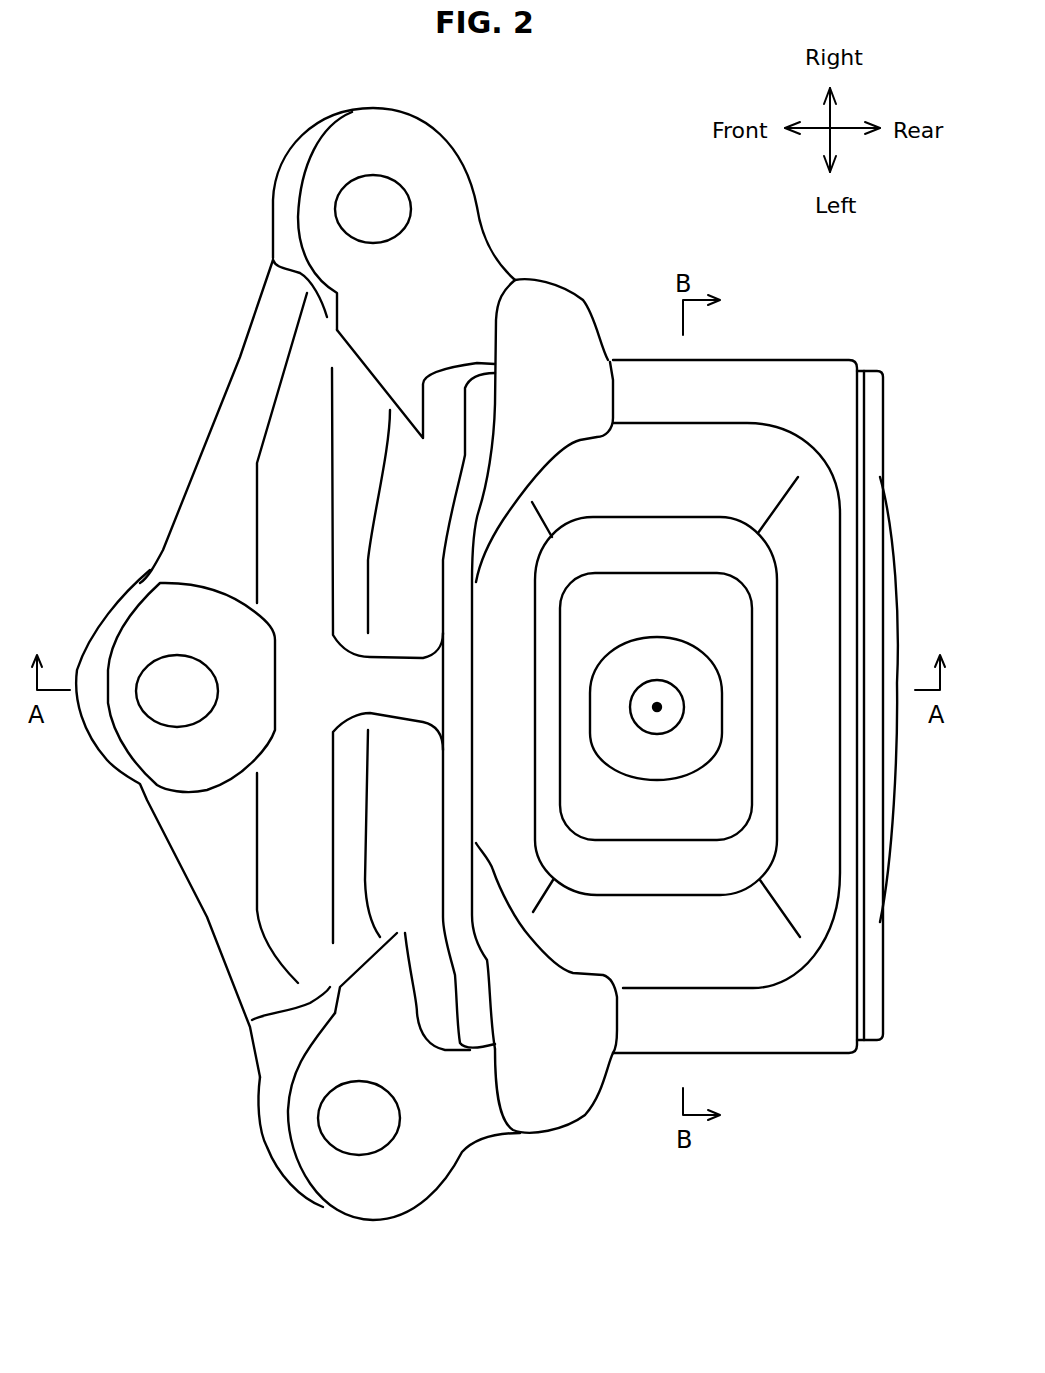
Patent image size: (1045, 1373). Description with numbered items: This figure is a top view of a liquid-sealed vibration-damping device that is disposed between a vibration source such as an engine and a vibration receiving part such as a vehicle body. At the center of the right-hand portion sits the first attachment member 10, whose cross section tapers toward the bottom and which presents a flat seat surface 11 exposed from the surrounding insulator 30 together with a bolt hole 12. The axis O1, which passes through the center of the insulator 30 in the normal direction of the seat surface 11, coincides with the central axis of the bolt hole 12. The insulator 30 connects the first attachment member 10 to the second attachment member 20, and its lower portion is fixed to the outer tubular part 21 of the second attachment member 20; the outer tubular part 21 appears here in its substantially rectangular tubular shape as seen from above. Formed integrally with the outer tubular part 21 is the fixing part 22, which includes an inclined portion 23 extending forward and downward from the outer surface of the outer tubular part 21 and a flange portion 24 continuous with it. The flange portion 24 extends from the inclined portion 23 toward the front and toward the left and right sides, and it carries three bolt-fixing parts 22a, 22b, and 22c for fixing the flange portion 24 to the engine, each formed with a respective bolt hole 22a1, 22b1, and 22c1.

The first attachment member 10 is at (736, 600).
The seat surface 11 is at (703, 700).
The bolt hole 12 is at (647, 735).
The axis O1 is at (657, 703).
The second attachment member 20 is at (659, 345).
The outer tubular part 21 is at (818, 387).
The fixing part 22 is at (201, 341).
The bolt-fixing part 22a is at (303, 148).
The bolt hole 22a1 is at (377, 178).
The bolt-fixing part 22b is at (120, 623).
The bolt hole 22b1 is at (157, 722).
The bolt-fixing part 22c is at (368, 1190).
The bolt hole 22c1 is at (330, 1140).
The inclined portion 23 is at (397, 812).
The flange portion 24 is at (210, 505).
The insulator 30 is at (824, 753).